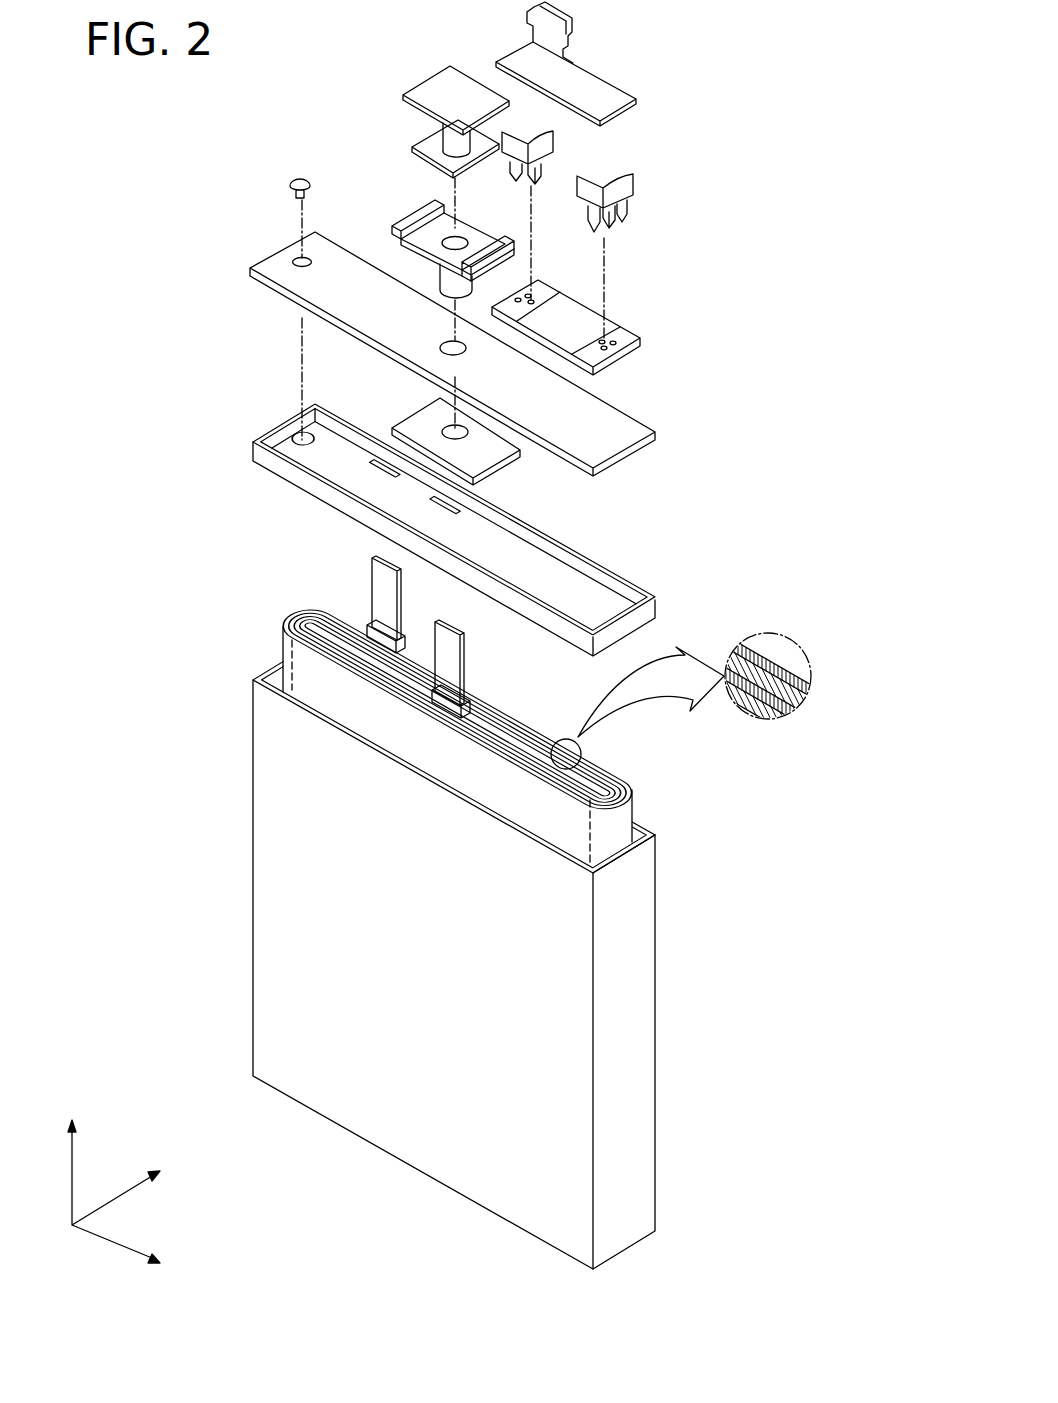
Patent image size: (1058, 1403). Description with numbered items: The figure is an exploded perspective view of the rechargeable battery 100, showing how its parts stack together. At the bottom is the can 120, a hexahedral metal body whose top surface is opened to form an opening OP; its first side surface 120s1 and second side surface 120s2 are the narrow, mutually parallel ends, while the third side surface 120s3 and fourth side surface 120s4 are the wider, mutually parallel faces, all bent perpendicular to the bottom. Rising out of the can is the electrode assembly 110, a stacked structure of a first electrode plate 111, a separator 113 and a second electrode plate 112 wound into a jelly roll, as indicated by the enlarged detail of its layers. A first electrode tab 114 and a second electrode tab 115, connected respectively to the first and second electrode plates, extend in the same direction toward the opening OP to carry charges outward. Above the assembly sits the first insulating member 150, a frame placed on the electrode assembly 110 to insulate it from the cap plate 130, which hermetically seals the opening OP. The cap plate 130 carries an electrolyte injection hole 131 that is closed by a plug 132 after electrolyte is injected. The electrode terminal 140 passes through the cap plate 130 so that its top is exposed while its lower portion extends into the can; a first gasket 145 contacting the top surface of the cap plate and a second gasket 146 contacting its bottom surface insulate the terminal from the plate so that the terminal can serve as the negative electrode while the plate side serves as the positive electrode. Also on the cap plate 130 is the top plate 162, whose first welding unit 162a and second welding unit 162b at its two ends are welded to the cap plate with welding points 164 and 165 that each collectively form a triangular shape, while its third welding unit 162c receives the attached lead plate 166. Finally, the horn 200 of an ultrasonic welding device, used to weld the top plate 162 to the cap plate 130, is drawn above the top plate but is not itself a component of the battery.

The rechargeable battery 100 is at (715, 159).
The electrode assembly 110 is at (632, 779).
The first electrode plate 111 is at (805, 697).
The second electrode plate 112 is at (810, 685).
The separator 113 is at (807, 693).
The first electrode tab 114 is at (467, 673).
The second electrode tab 115 is at (382, 590).
The can 120 is at (493, 1212).
The first side surface 120s1 is at (253, 1035).
The second side surface 120s2 is at (620, 1242).
The third side surface 120s3 is at (422, 1150).
The fourth side surface 120s4 is at (650, 830).
The opening OP is at (273, 677).
The cap plate 130 is at (630, 450).
The electrolyte injection hole 131 is at (293, 257).
The plug 132 is at (300, 183).
The electrode terminal 140 is at (428, 88).
The first gasket 145 is at (408, 222).
The second gasket 146 is at (405, 412).
The first insulating member 150 is at (647, 612).
The top plate 162 is at (572, 247).
The first welding unit 162a is at (565, 275).
The second welding unit 162b is at (623, 337).
The third welding unit 162c is at (587, 325).
The welding points 164 is at (517, 304).
The welding points 165 is at (622, 347).
The lead plate 166 is at (602, 93).
The horn 200 is at (633, 185).